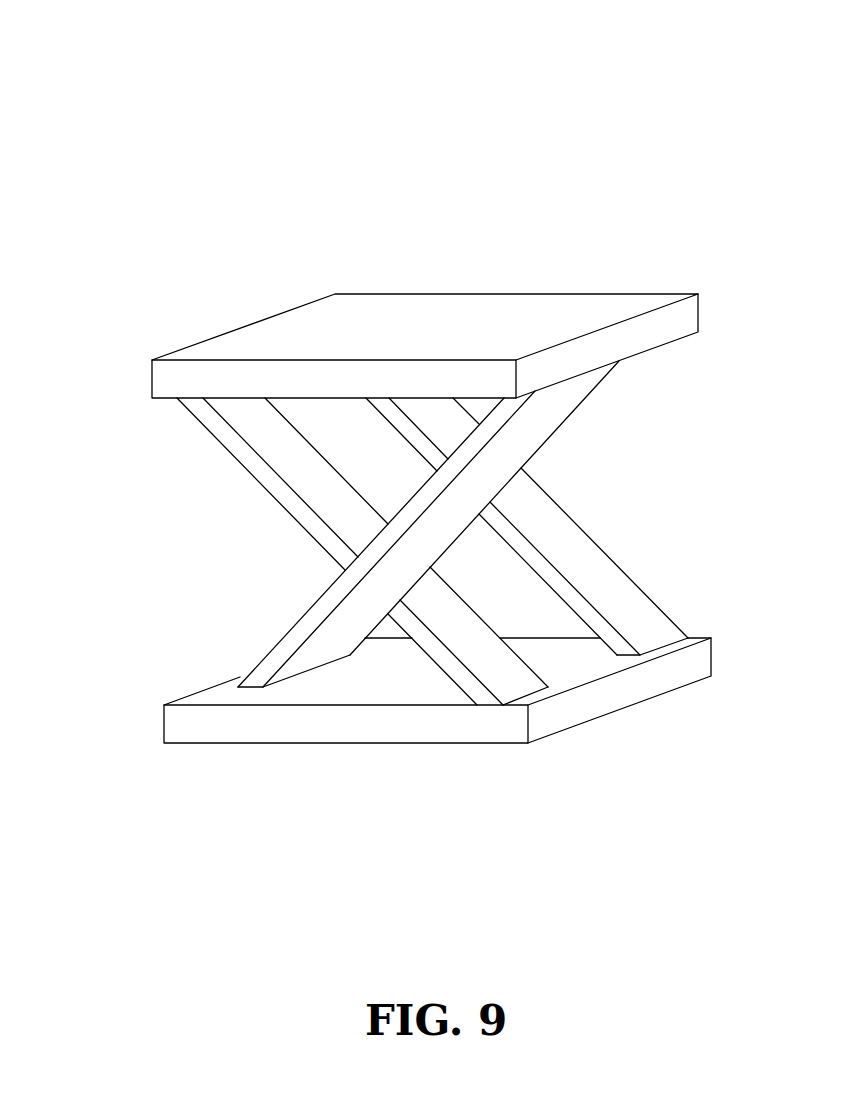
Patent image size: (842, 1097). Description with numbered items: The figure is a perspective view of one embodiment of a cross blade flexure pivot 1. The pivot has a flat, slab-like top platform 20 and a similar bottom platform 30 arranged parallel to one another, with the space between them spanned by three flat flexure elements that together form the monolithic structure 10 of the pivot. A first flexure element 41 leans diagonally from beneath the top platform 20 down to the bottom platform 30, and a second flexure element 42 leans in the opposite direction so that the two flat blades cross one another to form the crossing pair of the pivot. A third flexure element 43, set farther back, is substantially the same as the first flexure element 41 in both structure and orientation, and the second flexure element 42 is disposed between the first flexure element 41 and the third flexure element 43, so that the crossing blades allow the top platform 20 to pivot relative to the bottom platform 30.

The cross blade flexure pivot 1 is at (405, 97).
The monolithic structure 10 is at (137, 522).
The top platform 20 is at (397, 315).
The bottom platform 30 is at (603, 700).
The first flexure element 41 is at (313, 525).
The second flexure element 42 is at (535, 423).
The third flexure element 43 is at (595, 573).